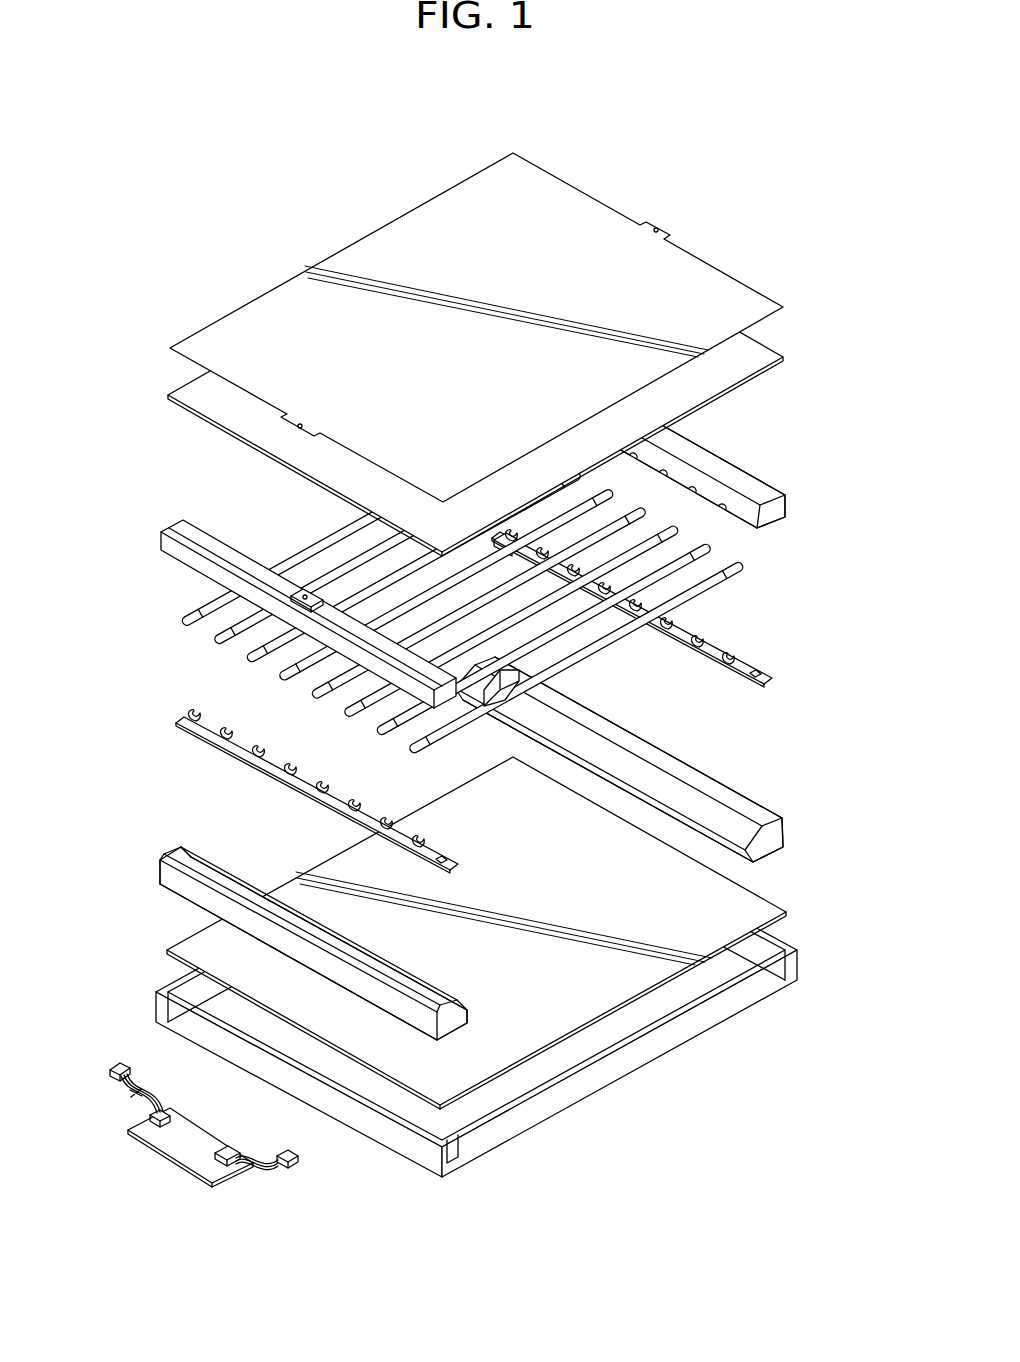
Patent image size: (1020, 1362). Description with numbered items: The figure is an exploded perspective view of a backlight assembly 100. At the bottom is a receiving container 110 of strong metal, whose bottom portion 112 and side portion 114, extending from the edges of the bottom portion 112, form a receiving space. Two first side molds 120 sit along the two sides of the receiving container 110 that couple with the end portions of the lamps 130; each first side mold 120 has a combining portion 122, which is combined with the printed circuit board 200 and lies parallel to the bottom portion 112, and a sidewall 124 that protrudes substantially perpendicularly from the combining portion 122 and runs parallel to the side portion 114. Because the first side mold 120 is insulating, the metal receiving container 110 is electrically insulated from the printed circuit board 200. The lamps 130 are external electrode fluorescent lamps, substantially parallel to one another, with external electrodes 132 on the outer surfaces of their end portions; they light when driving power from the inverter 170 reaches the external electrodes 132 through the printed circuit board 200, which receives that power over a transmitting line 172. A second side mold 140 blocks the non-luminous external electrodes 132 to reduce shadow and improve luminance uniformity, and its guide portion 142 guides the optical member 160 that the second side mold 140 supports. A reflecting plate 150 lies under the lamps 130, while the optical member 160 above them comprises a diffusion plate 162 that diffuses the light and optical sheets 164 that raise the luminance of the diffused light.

The backlight assembly 100 is at (526, 94).
The receiving container 110 is at (439, 986).
The bottom portion 112 is at (623, 1030).
The side portion 114 is at (602, 1078).
The first side mold 120 is at (459, 848).
The combining portion 122 is at (635, 759).
The sidewall 124 is at (680, 768).
The lamp 130 is at (498, 594).
The external electrode 132 is at (730, 566).
The second side mold 140 is at (269, 581).
The guide portion 142 is at (303, 592).
The reflecting plate 150 is at (178, 950).
The optical member 160 is at (443, 354).
The diffusion plate 162 is at (181, 389).
The optical sheets 164 is at (200, 336).
The inverter 170 is at (199, 1115).
The transmitting line 172 is at (127, 1073).
The printed circuit board 200 is at (176, 698).